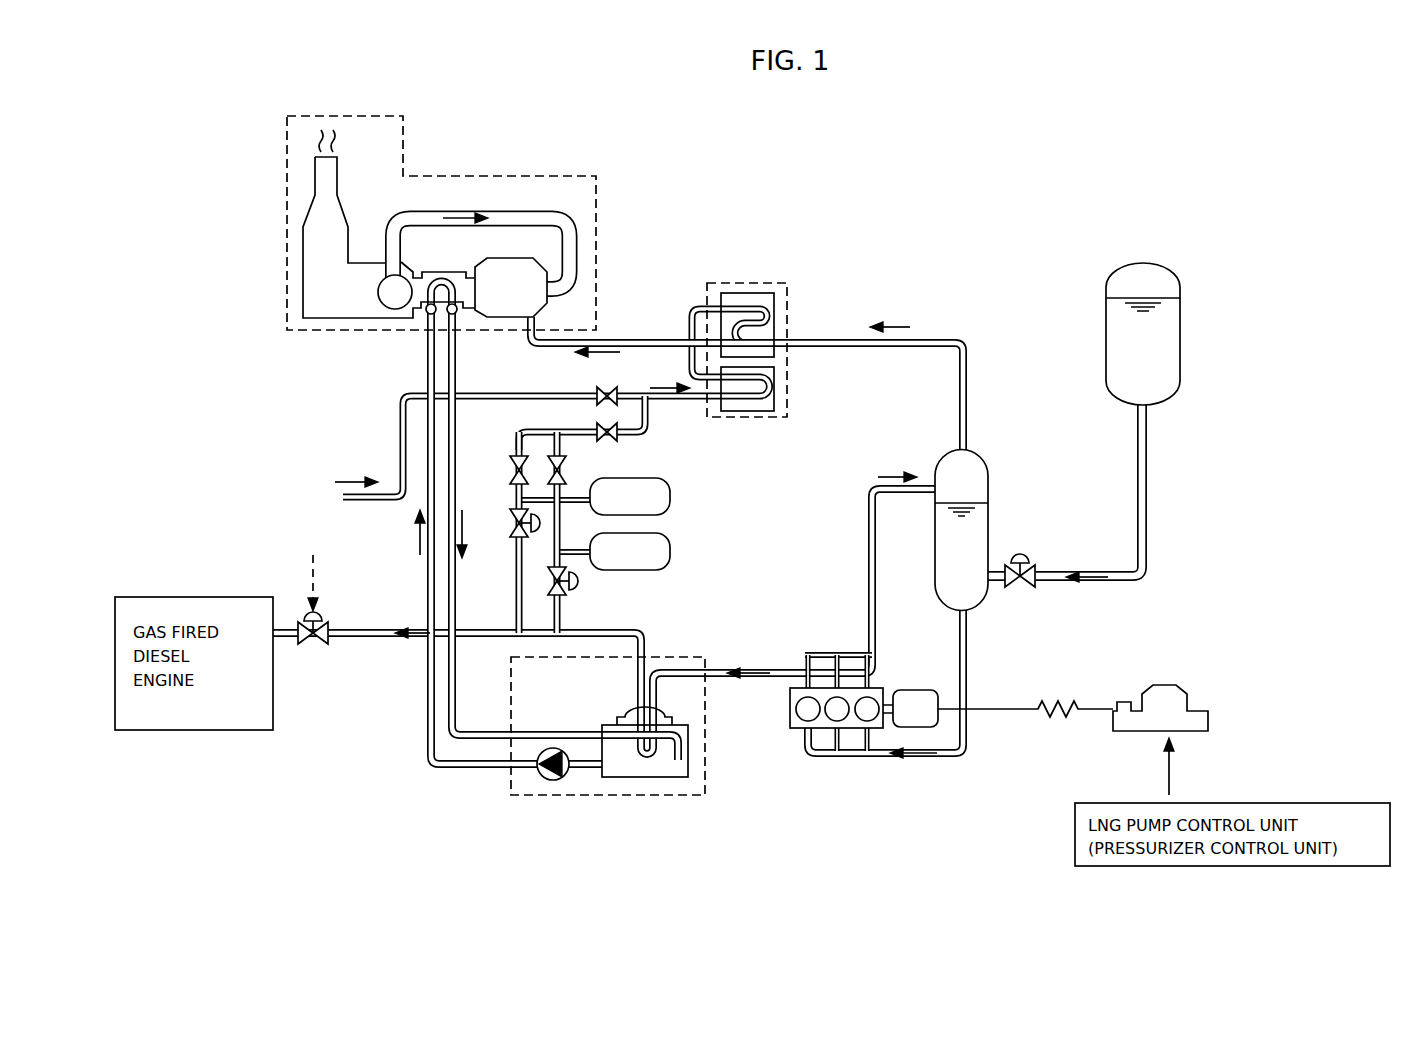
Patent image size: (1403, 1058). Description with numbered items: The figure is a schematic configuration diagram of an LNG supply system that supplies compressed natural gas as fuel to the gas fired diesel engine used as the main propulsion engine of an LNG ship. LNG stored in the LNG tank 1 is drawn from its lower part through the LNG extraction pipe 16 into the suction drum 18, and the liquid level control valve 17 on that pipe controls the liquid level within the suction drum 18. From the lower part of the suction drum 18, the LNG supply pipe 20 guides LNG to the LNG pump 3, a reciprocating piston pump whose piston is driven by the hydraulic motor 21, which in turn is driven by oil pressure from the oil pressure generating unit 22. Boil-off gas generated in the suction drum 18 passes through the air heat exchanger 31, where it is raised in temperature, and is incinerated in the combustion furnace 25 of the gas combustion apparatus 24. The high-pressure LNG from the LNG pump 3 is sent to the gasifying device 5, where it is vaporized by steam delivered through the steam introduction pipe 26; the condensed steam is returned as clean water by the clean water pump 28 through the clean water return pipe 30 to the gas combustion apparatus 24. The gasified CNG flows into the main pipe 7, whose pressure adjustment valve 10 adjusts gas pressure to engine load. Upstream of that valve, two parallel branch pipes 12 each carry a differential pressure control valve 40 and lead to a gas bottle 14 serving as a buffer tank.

The LNG tank 1 is at (1203, 290).
The LNG pump 3 is at (790, 712).
The gasifying device 5 is at (715, 775).
The main pipe 7 is at (645, 652).
The pressure adjustment valve 10 is at (316, 645).
The branch pipe 12 is at (516, 585).
The gas bottle 14 is at (670, 497).
The LNG extraction pipe 16 is at (1148, 492).
The liquid level control valve 17 is at (1030, 558).
The suction drum 18 is at (988, 490).
The LNG supply pipe 20 is at (967, 648).
The hydraulic motor 21 is at (913, 690).
The oil pressure generating unit 22 is at (1183, 688).
The gas combustion apparatus 24 is at (268, 178).
The combustion furnace 25 is at (512, 258).
The steam introduction pipe 26 is at (458, 470).
The clean water pump 28 is at (537, 772).
The clean water return pipe 30 is at (427, 752).
The air heat exchanger 31 is at (778, 270).
The differential pressure control valve 40 is at (538, 532).